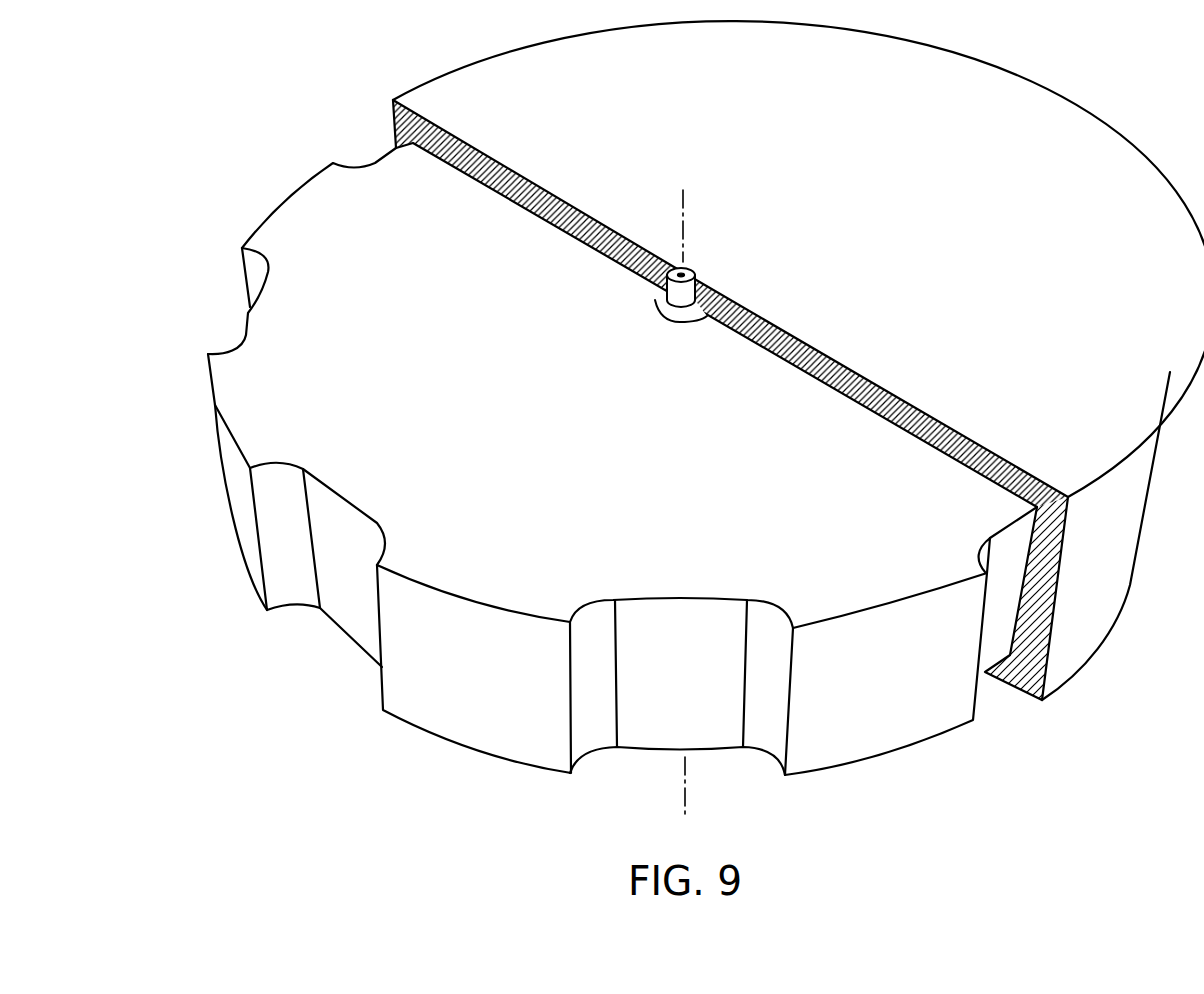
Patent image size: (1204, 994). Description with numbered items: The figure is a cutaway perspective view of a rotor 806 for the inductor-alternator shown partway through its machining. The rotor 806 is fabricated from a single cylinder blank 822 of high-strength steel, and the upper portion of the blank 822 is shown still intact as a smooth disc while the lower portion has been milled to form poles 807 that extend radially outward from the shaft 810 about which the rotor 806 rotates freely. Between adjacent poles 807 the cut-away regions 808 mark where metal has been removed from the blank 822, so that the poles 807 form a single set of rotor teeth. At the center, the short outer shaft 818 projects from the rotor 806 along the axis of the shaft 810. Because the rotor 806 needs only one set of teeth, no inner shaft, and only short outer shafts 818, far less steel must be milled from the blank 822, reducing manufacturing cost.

The rotor 806 is at (1010, 723).
The poles 807 is at (460, 708).
The recess 808 is at (683, 733).
The shaft 810 is at (698, 283).
The outer shaft 818 is at (697, 316).
The cylinder blank 822 is at (1070, 147).